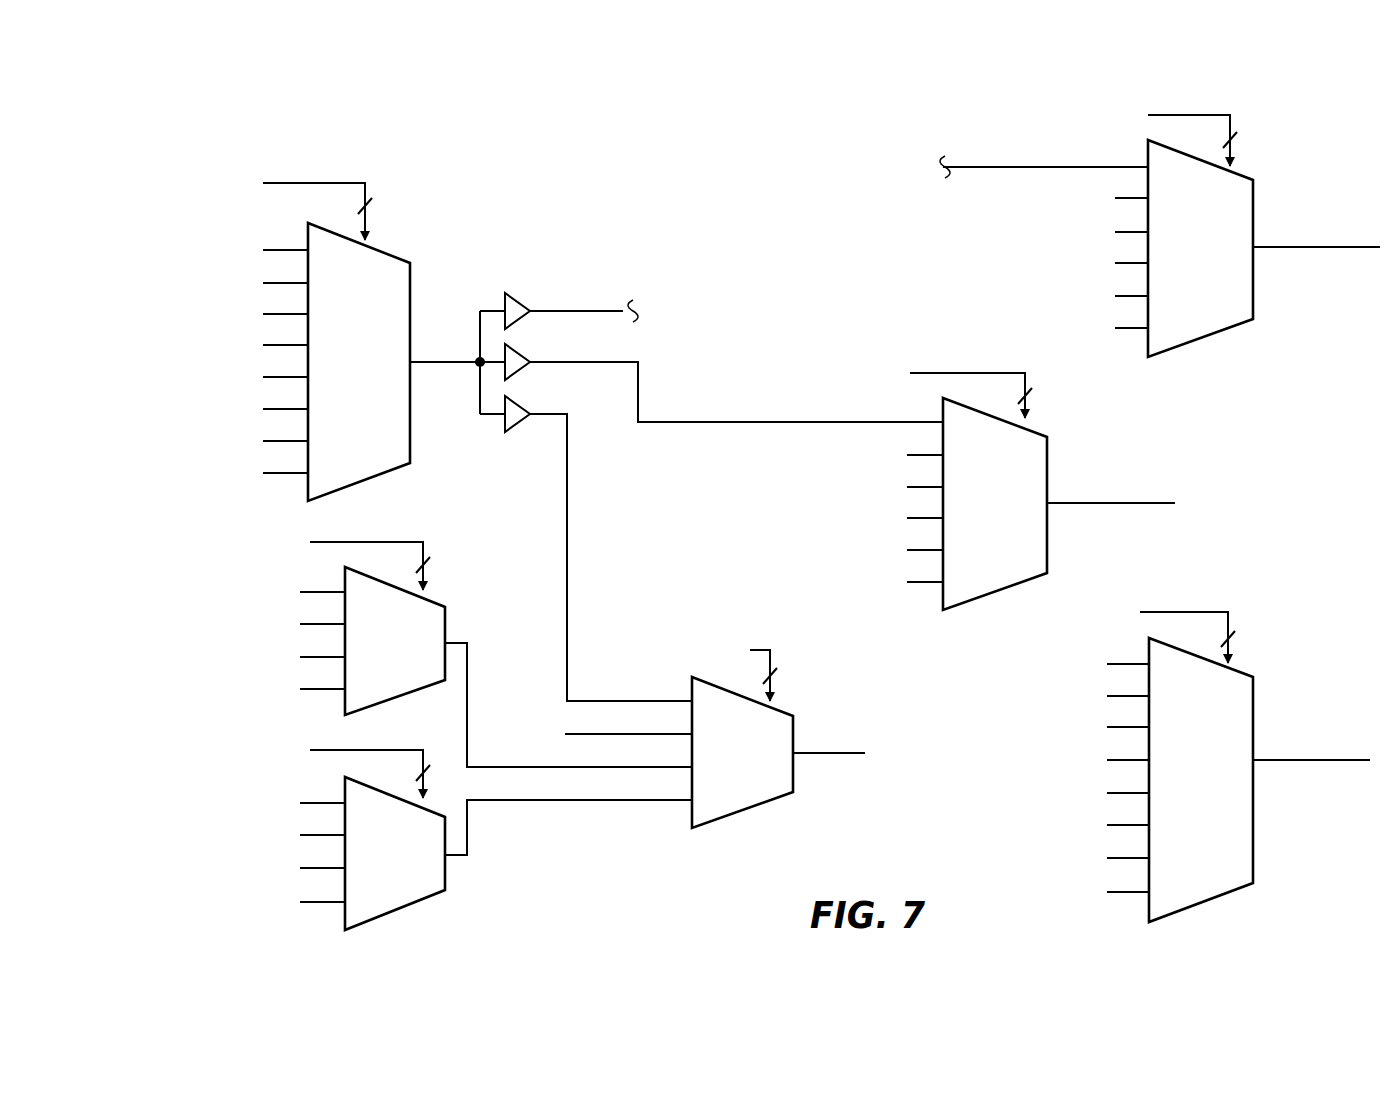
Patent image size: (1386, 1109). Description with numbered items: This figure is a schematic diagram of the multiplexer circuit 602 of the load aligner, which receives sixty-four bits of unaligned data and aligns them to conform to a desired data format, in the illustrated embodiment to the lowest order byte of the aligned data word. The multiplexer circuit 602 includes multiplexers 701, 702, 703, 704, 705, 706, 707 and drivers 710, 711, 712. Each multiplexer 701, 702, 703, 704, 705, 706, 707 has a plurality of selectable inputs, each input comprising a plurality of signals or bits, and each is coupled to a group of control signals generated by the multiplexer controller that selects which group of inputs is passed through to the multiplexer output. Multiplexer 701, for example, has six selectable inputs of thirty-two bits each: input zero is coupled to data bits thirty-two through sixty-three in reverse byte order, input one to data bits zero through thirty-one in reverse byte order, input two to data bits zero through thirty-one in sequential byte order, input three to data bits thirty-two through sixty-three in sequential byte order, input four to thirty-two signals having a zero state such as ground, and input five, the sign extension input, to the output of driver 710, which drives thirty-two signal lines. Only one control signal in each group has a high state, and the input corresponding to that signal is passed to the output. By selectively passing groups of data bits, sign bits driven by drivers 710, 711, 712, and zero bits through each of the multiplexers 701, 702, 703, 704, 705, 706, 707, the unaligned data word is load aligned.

The multiplexer circuit 602 is at (429, 150).
The multiplexer 701 is at (1228, 325).
The multiplexer 702 is at (935, 604).
The multiplexer 703 is at (446, 613).
The multiplexer 704 is at (446, 885).
The multiplexer 705 is at (730, 815).
The multiplexer 706 is at (1230, 890).
The multiplexer 707 is at (395, 248).
The driver 710 is at (506, 298).
The driver 711 is at (503, 371).
The driver 712 is at (505, 424).